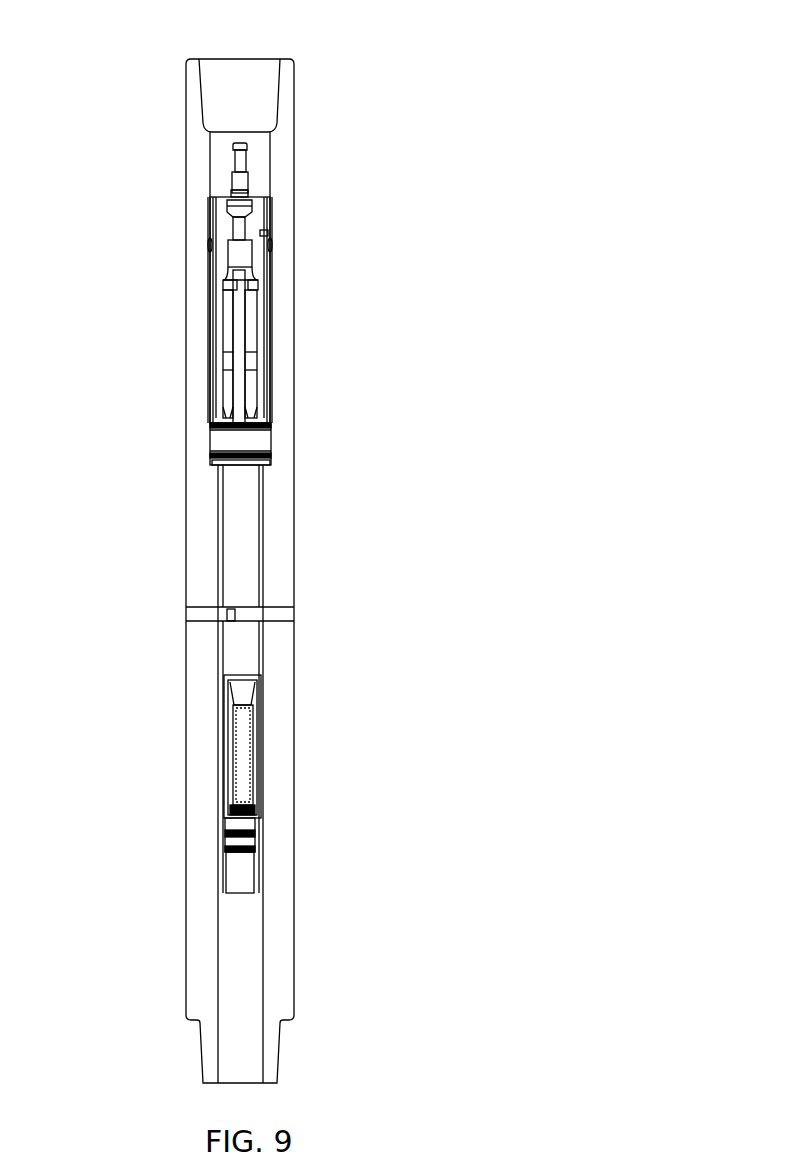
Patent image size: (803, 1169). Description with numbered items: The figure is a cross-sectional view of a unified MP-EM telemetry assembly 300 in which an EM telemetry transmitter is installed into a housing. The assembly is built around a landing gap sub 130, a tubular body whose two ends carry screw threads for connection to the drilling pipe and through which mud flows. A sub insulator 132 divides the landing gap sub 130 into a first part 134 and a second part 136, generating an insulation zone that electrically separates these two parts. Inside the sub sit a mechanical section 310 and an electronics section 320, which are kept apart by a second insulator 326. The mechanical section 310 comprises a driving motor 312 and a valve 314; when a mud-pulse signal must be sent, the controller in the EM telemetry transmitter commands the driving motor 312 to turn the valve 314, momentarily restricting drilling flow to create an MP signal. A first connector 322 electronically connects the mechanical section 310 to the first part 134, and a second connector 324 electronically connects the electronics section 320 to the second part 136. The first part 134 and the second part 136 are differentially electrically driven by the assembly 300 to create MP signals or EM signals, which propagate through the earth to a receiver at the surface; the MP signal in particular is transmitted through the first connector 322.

The unified MP-EM telemetry assembly 300 is at (337, 93).
The landing gap sub 130 is at (288, 277).
The sub insulator 132 is at (210, 613).
The first part 134 is at (205, 493).
The second part 136 is at (203, 903).
The mechanical section 310 is at (230, 289).
The driving motor 312 is at (235, 327).
The valve 314 is at (240, 222).
The electronics section 320 is at (242, 870).
The first connector 322 is at (240, 442).
The second connector 324 is at (240, 740).
The second insulator 326 is at (240, 614).